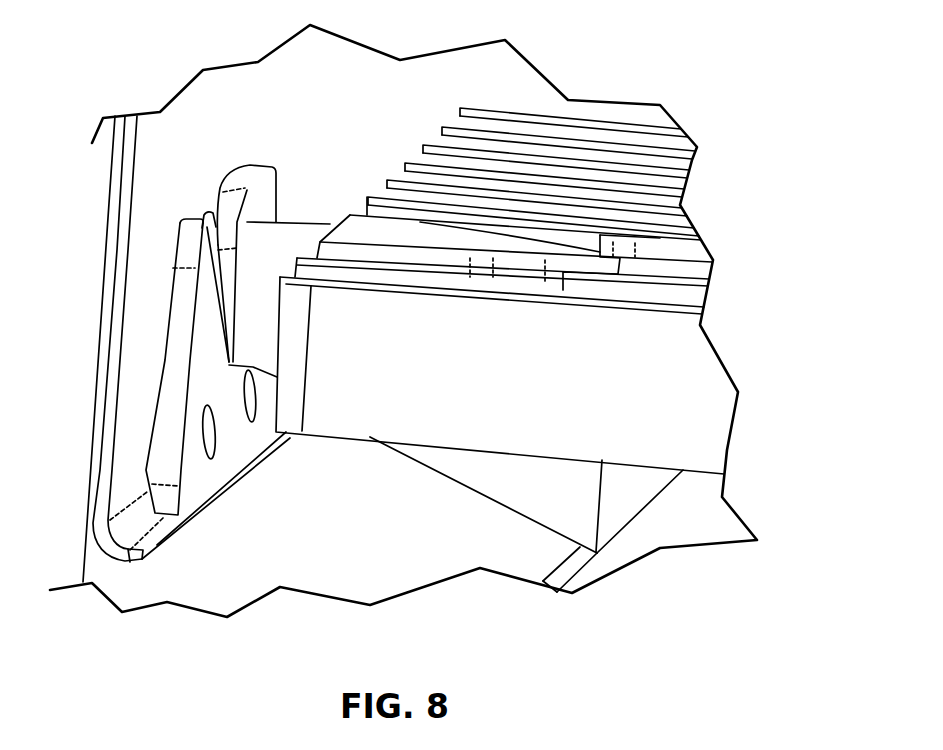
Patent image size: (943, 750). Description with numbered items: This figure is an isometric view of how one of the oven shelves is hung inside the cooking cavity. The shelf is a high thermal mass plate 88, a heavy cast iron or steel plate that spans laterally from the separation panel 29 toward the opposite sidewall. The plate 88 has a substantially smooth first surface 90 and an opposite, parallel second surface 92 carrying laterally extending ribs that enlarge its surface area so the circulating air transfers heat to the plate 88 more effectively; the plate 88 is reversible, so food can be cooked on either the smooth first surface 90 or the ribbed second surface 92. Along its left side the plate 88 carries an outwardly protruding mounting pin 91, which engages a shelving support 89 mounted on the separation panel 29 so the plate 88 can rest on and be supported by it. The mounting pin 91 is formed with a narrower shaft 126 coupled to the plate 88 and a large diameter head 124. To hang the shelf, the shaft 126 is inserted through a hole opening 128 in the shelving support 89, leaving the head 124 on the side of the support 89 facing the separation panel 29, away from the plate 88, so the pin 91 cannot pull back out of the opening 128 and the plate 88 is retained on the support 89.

The separation panel 29 is at (147, 176).
The high thermal mass plate 88 is at (675, 432).
The shelving support 89 is at (160, 334).
The first surface 90 is at (361, 462).
The mounting pin 91 is at (325, 203).
The second surface 92 is at (737, 253).
The head 124 is at (212, 212).
The shaft 126 is at (287, 250).
The hole opening 128 is at (222, 183).